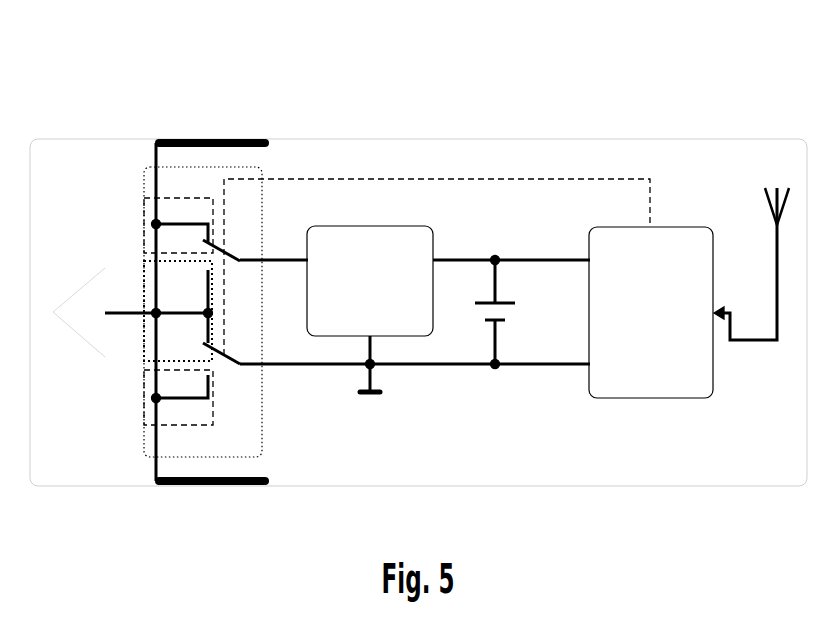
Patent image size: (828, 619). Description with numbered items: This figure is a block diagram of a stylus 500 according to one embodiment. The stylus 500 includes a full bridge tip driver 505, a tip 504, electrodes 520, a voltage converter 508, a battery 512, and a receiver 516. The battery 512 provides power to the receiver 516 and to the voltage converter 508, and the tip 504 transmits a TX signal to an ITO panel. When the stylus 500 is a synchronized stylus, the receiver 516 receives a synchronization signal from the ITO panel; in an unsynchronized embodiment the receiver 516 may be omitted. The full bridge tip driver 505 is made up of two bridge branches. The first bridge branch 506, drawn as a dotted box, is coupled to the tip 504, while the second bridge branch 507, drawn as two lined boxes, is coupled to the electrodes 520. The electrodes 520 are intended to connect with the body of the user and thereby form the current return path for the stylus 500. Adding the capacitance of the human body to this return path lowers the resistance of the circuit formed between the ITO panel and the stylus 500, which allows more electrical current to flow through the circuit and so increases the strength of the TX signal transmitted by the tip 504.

The stylus 500 is at (417, 139).
The electrodes 520 is at (232, 560).
The first bridge branch 506 is at (144, 280).
The second bridge branch 507 is at (144, 220).
The tip 504 is at (79, 332).
The full bridge tip driver 505 is at (262, 388).
The voltage converter 508 is at (357, 319).
The battery 512 is at (537, 346).
The receiver 516 is at (696, 324).